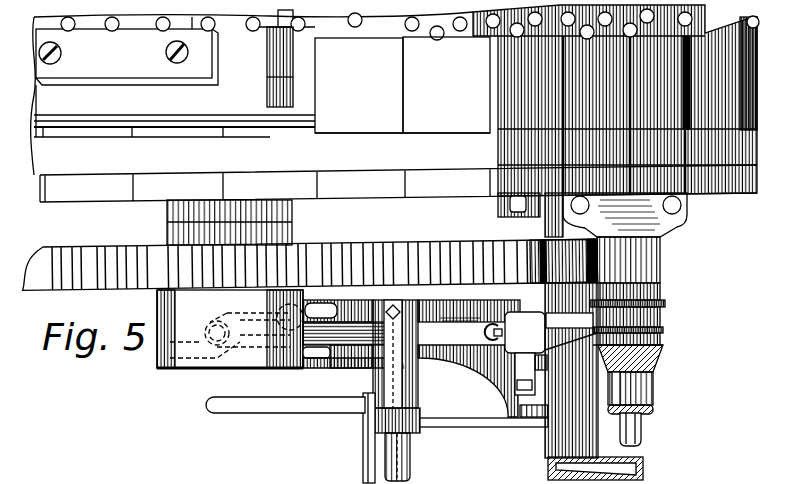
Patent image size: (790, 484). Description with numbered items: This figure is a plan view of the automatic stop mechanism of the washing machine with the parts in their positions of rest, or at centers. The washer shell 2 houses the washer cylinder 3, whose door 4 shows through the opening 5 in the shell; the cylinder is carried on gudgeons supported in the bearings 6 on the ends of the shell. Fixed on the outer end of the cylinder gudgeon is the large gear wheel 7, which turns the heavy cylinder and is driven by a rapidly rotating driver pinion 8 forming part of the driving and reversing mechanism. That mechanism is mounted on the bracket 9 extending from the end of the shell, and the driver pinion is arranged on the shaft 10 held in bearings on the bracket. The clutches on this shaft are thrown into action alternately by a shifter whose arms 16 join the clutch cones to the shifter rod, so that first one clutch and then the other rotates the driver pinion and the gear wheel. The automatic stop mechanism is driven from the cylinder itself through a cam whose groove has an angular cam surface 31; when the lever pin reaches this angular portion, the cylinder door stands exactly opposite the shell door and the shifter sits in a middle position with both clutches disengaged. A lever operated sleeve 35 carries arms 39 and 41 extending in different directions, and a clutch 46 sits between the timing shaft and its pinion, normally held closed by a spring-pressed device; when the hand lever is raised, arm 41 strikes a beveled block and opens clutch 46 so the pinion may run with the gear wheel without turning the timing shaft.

The washer shell 2 is at (320, 60).
The washer cylinder 3 is at (410, 23).
The door 4 is at (127, 57).
The opening 5 is at (434, 87).
The bearings 6 is at (295, 208).
The large gear wheel 7 is at (92, 221).
The driver pinion 8 is at (657, 268).
The bracket 9 is at (585, 387).
The shaft 10 is at (647, 434).
The shifter arms 16 is at (538, 308).
The cam surface 31 is at (238, 313).
The lever operated sleeve 35 is at (496, 322).
The arm 39 is at (418, 362).
The arm 41 is at (470, 420).
The clutch 46 is at (532, 428).